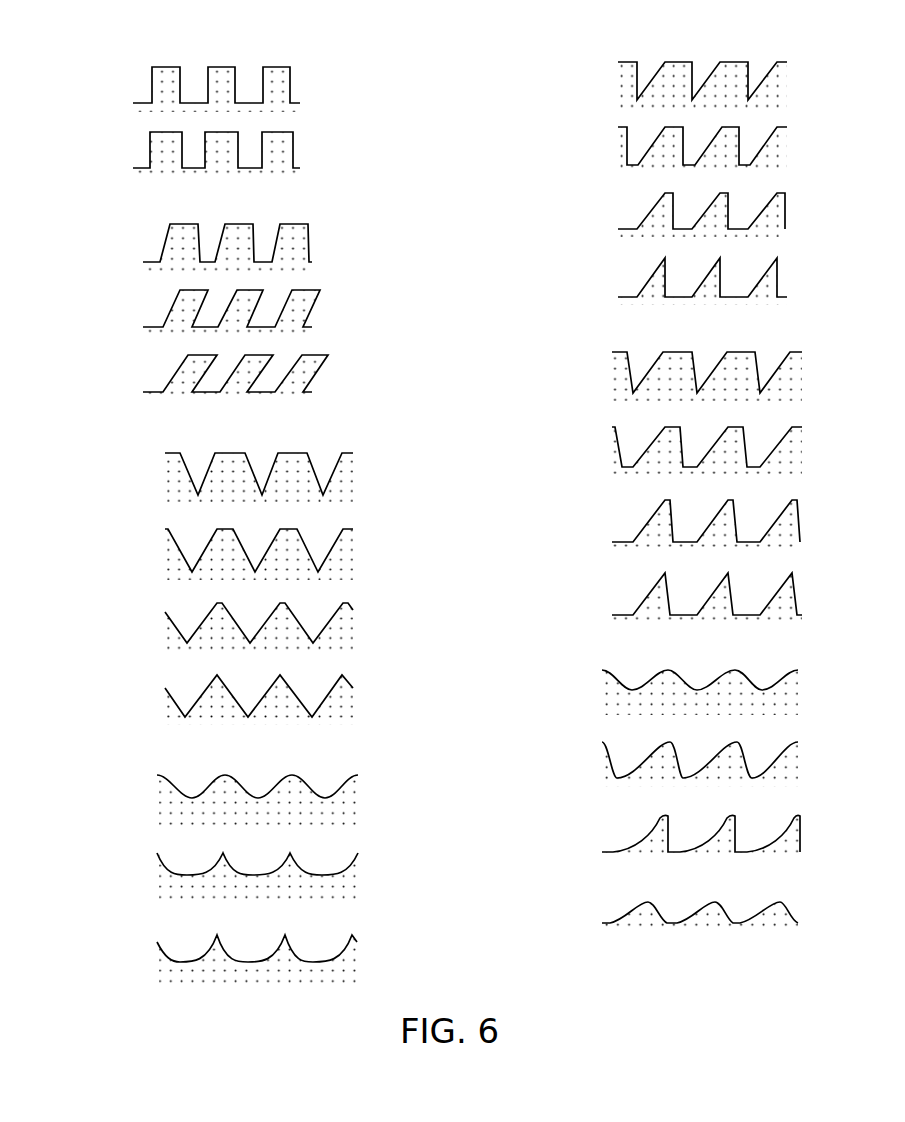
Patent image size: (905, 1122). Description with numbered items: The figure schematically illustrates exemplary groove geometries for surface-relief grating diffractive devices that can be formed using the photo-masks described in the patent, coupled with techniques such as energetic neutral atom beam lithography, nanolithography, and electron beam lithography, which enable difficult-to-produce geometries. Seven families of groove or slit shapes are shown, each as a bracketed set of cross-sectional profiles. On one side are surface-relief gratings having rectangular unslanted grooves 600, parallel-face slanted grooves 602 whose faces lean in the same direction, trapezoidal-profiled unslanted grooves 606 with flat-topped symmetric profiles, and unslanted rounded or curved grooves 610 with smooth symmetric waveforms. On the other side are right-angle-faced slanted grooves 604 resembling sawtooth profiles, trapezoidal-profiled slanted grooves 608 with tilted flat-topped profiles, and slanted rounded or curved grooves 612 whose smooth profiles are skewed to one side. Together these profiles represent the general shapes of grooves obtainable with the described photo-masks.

The rectangular unslanted grooves 600 is at (130, 55).
The parallel-face slanted grooves 602 is at (147, 212).
The right-angle-faced slanted grooves 604 is at (617, 50).
The trapezoidal-profiled unslanted grooves 606 is at (170, 440).
The trapezoidal-profiled slanted grooves 608 is at (615, 342).
The unslanted rounded or curved grooves 610 is at (155, 767).
The slanted rounded or curved grooves 612 is at (600, 658).